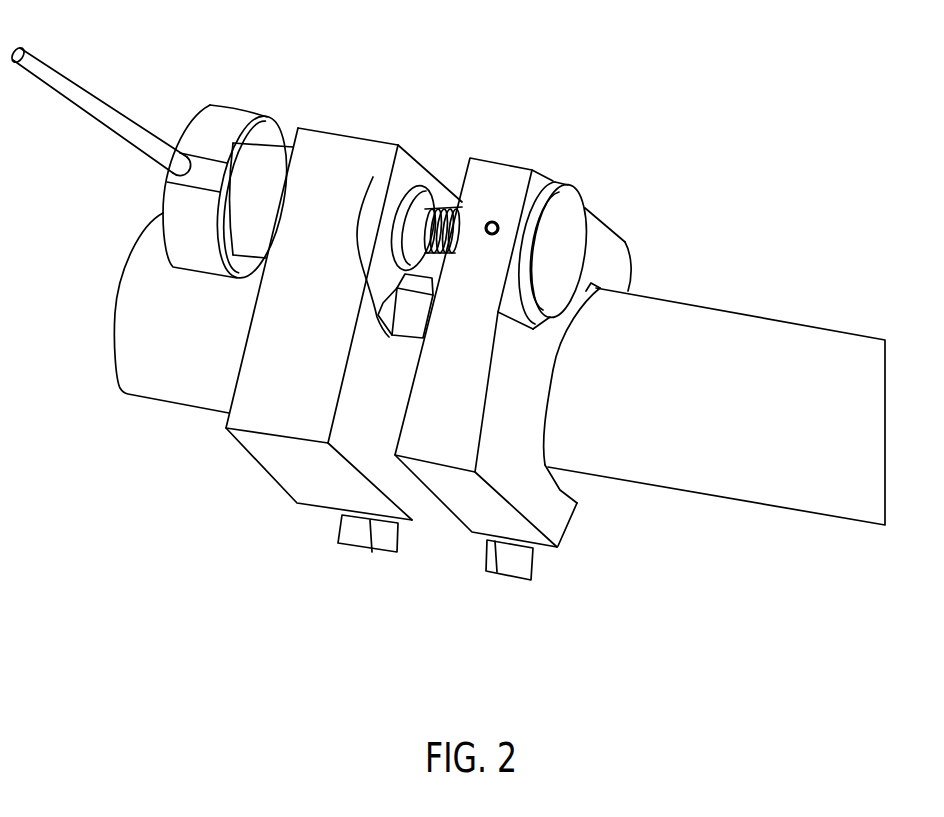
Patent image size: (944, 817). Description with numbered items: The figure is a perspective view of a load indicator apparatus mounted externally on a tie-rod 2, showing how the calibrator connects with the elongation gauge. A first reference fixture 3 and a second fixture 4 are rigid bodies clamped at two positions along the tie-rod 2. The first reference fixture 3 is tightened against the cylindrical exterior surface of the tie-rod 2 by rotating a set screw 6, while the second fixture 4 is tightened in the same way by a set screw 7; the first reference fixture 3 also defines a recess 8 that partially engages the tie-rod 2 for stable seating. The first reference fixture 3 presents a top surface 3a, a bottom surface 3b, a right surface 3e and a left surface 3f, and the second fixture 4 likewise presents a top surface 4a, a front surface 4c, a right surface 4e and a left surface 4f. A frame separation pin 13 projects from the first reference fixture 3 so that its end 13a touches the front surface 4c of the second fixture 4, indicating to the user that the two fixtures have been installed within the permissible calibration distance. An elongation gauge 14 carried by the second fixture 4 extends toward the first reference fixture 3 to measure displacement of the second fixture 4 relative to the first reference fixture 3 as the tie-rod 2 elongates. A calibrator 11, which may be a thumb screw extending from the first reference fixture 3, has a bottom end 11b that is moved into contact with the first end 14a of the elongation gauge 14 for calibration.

The tie-rod 2 is at (703, 321).
The first reference fixture 3 is at (625, 242).
The top surface 3a is at (503, 180).
The bottom surface 3b is at (566, 526).
The right surface 3e is at (536, 176).
The left surface 3f is at (467, 505).
The second fixture 4 is at (288, 288).
The top surface 4a is at (325, 143).
The front surface 4c is at (348, 450).
The right surface 4e is at (356, 132).
The left surface 4f is at (260, 453).
The set screw 6 is at (505, 562).
The set screw 7 is at (363, 540).
The recess 8 is at (560, 490).
The calibrator 11 is at (584, 206).
The bottom end 11b is at (448, 212).
The frame separation pin 13 is at (406, 298).
The end 13a is at (373, 177).
The elongation gauge 14 is at (415, 185).
The first end 14a is at (427, 198).